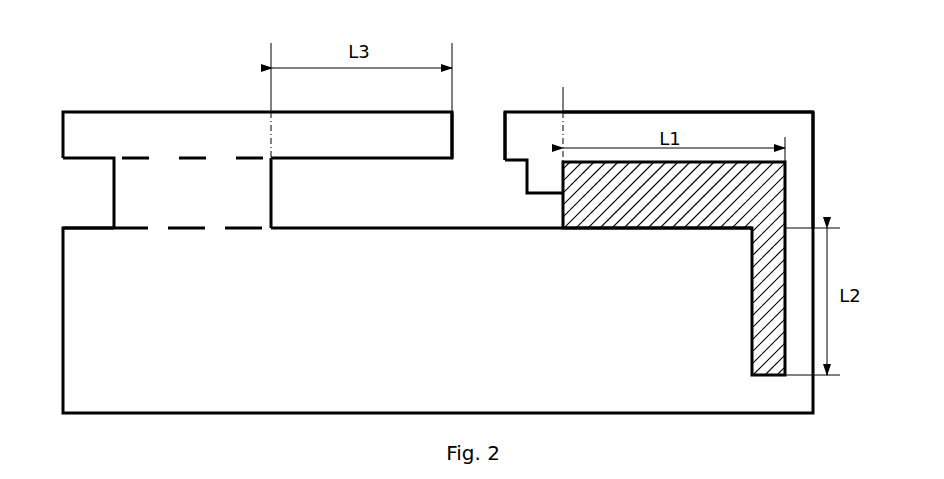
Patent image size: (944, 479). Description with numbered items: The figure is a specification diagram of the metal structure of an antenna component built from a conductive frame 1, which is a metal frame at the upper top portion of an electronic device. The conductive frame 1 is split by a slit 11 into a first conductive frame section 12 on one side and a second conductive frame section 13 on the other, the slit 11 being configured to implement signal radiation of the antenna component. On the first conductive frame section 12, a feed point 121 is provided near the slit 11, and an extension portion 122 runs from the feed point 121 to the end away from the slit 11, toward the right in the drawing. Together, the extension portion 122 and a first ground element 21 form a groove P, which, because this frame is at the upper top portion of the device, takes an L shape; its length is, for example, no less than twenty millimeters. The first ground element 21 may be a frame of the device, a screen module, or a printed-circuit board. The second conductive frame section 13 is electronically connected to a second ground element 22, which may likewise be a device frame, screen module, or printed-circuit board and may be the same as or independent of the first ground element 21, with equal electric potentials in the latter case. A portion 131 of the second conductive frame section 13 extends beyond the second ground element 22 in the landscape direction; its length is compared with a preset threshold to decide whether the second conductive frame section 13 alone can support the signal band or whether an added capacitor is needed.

The conductive frame 1 is at (438, 122).
The slit 11 is at (472, 110).
The first conductive frame section 12 is at (600, 110).
The feed point 121 is at (524, 184).
The extension portion 122 is at (707, 123).
The second conductive frame section 13 is at (173, 110).
The portion of the second conductive frame section exceeding beyond the second groun 131 is at (298, 128).
The first ground element 21 is at (383, 227).
The second ground element 22 is at (273, 207).
The groove P is at (660, 196).